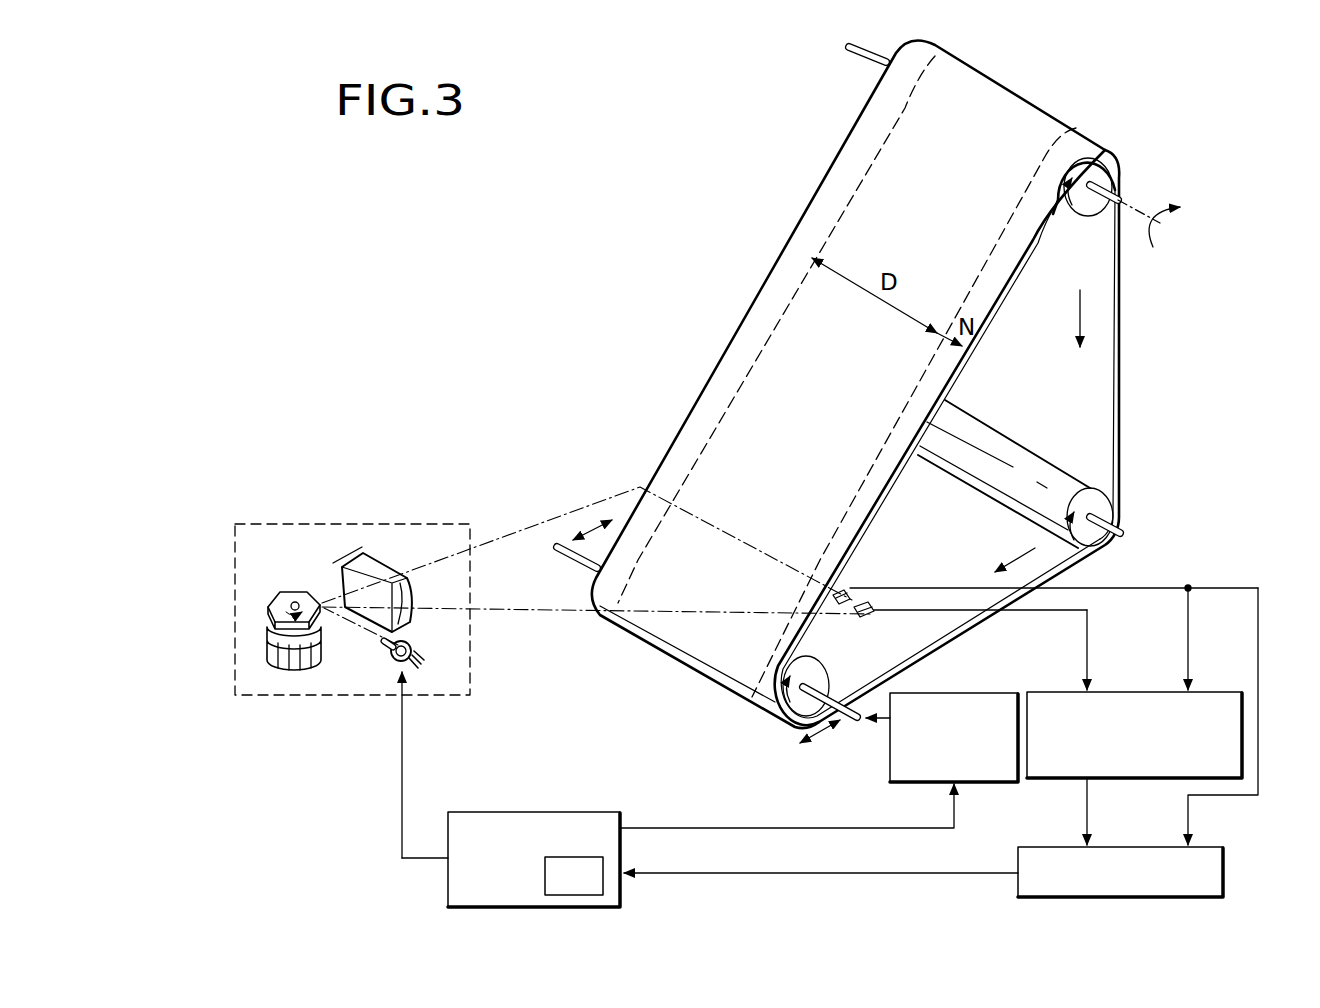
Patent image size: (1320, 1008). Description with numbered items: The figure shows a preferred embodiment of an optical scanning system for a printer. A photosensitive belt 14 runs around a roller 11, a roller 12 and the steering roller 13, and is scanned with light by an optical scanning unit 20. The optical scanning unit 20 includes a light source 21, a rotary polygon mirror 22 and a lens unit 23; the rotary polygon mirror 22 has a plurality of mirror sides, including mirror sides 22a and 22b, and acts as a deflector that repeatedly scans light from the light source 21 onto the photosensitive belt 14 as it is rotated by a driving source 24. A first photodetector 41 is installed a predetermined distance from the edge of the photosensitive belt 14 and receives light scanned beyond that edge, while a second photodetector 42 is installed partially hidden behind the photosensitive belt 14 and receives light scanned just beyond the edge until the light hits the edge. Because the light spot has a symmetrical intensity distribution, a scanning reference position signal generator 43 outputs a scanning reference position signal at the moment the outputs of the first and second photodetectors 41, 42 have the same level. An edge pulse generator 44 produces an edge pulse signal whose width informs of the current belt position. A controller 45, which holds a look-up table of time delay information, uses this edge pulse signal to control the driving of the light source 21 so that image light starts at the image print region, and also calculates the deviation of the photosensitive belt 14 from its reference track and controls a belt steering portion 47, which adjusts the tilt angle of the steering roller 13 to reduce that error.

The first roller 11 is at (1120, 170).
The second roller 12 is at (1121, 515).
The steering roller 13 is at (824, 660).
The photosensitive belt 14 is at (1122, 405).
The optical scanning unit 20 is at (273, 524).
The light source 21 is at (417, 650).
The rotary polygon mirror 22 is at (268, 606).
The mirror side 22a is at (323, 622).
The mirror side 22b is at (296, 626).
The lens unit 23 is at (343, 560).
The driving source 24 is at (268, 655).
The first photodetector 41 is at (872, 606).
The second photodetector 42 is at (846, 593).
The scanning reference position signal generator 43 is at (1137, 690).
The edge pulse generator 44 is at (1225, 873).
The controller 45 is at (535, 811).
The belt steering portion 47 is at (957, 692).